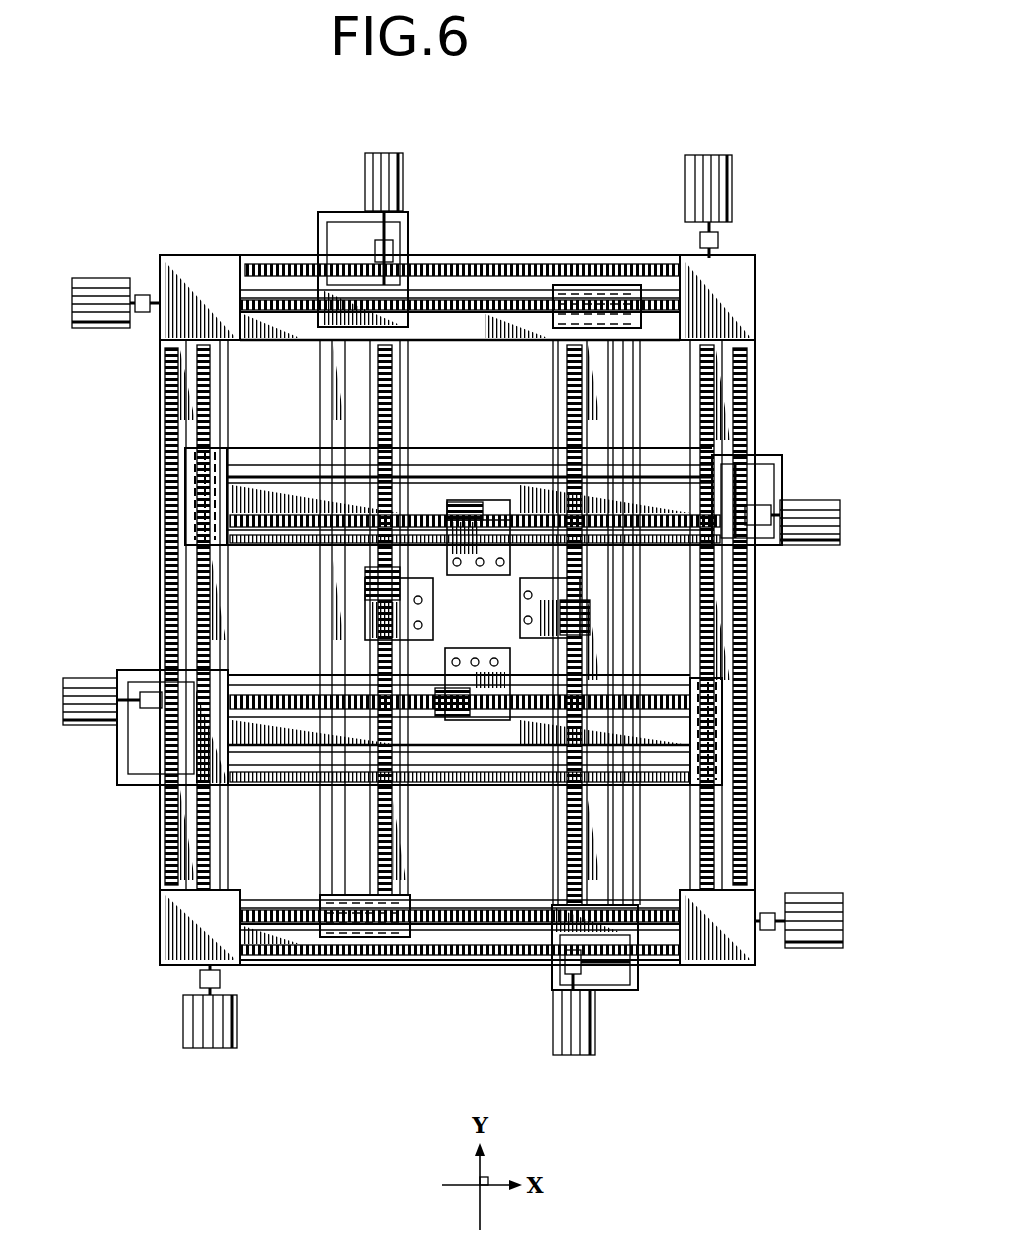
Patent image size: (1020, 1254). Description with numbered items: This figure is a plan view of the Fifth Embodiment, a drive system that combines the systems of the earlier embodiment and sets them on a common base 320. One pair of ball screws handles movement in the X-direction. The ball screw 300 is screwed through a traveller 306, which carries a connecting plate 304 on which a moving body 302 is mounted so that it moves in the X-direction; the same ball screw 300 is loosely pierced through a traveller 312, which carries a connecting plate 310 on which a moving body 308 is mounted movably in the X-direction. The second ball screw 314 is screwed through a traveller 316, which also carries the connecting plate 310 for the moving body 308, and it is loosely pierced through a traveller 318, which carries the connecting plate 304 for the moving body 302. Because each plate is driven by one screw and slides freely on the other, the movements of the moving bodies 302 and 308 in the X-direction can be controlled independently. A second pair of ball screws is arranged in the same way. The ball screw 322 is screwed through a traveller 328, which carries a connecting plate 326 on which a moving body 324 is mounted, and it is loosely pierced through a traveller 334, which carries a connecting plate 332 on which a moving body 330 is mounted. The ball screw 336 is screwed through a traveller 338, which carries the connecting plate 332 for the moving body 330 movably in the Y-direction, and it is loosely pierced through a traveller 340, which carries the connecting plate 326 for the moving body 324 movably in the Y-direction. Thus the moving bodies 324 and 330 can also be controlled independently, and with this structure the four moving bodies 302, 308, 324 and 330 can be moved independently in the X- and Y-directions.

The ball screw 300 is at (497, 302).
The moving body 302 is at (372, 620).
The connecting plate 304 is at (318, 570).
The traveller 306 is at (344, 283).
The moving body 308 is at (582, 606).
The connecting plate 310 is at (645, 657).
The traveller 312 is at (645, 328).
The ball screw 314 is at (490, 925).
The traveller 316 is at (607, 923).
The traveller 318 is at (370, 935).
The base 320 is at (758, 367).
The ball screw 322 is at (712, 847).
The moving body 324 is at (466, 512).
The connecting plate 326 is at (290, 448).
The traveller 328 is at (713, 502).
The moving body 330 is at (485, 700).
The connecting plate 332 is at (287, 785).
The traveller 334 is at (723, 733).
The ball screw 336 is at (203, 826).
The traveller 338 is at (210, 718).
The traveller 340 is at (190, 491).